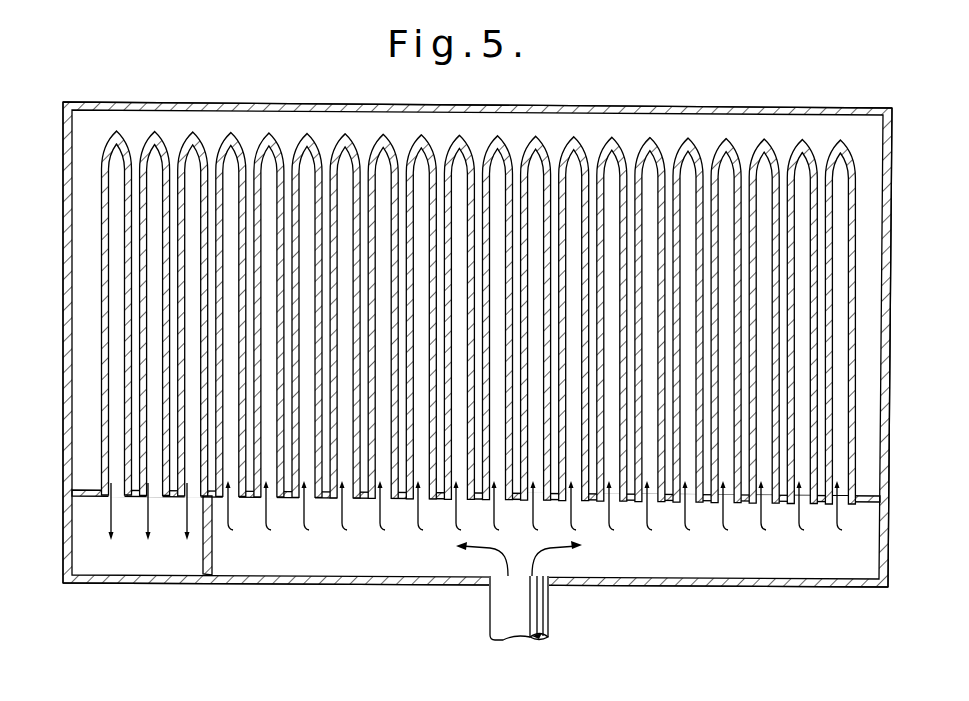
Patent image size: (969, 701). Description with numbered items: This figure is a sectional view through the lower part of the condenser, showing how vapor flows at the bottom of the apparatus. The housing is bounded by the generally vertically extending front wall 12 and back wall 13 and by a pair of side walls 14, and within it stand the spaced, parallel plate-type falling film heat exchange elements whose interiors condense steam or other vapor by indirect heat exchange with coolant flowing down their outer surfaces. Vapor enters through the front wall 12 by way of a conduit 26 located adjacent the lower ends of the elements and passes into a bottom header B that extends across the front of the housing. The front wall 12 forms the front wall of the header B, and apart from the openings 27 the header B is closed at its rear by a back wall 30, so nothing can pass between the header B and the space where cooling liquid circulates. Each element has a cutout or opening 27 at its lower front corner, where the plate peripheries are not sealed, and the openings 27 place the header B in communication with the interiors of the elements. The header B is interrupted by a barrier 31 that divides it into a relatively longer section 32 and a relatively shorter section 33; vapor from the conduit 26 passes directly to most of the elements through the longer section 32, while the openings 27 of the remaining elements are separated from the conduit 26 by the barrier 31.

The front wall 12 is at (650, 586).
The back wall 13 is at (661, 107).
The side walls 14 is at (64, 282).
The conduit 26 is at (510, 615).
The cutouts or openings 27 is at (178, 499).
The back wall of header 30 is at (378, 499).
The barrier 31 is at (213, 553).
The longer section 32 is at (753, 565).
The shorter section 33 is at (157, 565).
The bottom header B is at (375, 587).